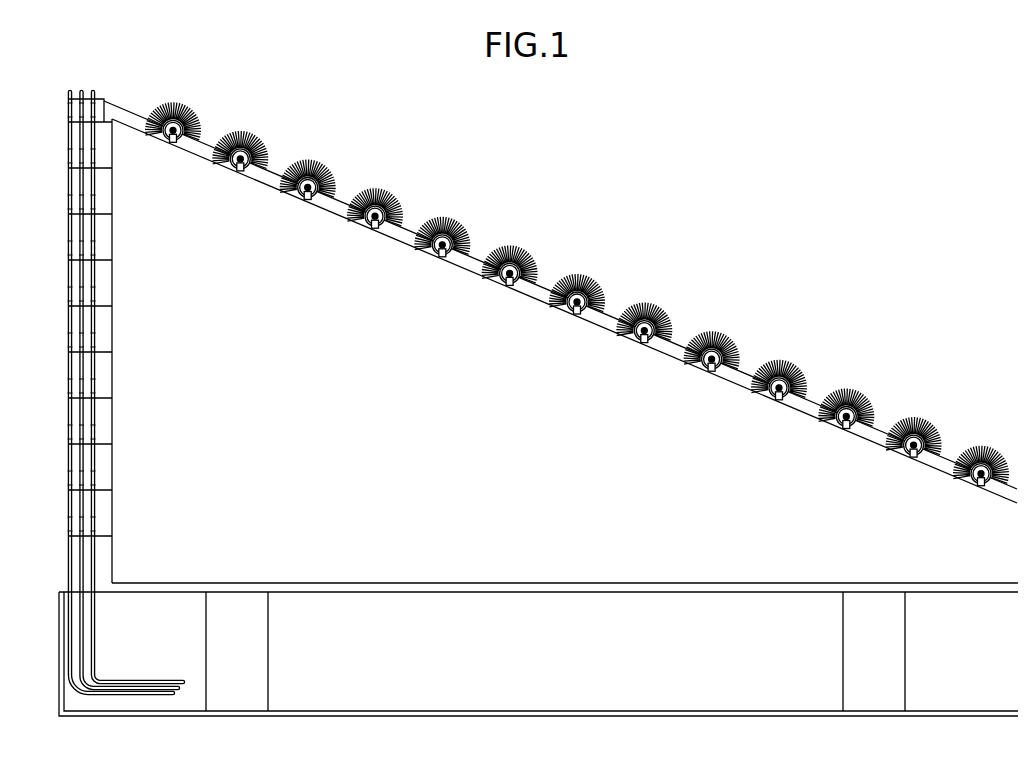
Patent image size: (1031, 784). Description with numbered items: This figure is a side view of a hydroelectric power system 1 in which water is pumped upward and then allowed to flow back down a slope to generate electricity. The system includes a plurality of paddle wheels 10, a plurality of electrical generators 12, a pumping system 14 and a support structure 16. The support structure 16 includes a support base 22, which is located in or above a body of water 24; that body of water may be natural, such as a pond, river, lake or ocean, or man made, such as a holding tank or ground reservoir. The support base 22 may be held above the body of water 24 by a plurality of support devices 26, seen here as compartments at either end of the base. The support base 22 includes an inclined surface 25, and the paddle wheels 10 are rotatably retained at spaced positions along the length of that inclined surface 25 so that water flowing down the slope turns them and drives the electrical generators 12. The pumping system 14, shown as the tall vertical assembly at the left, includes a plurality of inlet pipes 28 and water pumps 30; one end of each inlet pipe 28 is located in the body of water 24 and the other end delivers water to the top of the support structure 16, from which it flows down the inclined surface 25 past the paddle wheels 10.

The hydroelectric power system 1 is at (534, 380).
The paddle wheel 10 is at (390, 194).
The electrical generator 12 is at (364, 226).
The pumping system 14 is at (117, 369).
The support structure 16 is at (560, 302).
The support base 22 is at (472, 478).
The body of water 24 is at (532, 667).
The inclined surface 25 is at (610, 316).
The support device 26 is at (220, 662).
The inlet pipe 28 is at (94, 323).
The water pump 30 is at (94, 258).